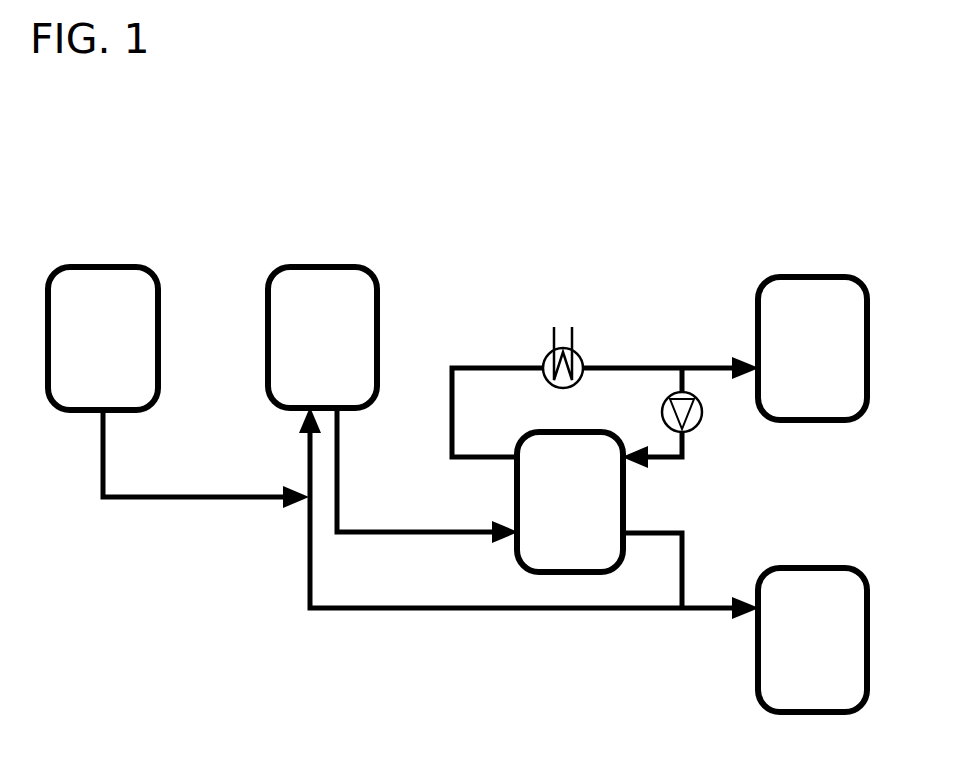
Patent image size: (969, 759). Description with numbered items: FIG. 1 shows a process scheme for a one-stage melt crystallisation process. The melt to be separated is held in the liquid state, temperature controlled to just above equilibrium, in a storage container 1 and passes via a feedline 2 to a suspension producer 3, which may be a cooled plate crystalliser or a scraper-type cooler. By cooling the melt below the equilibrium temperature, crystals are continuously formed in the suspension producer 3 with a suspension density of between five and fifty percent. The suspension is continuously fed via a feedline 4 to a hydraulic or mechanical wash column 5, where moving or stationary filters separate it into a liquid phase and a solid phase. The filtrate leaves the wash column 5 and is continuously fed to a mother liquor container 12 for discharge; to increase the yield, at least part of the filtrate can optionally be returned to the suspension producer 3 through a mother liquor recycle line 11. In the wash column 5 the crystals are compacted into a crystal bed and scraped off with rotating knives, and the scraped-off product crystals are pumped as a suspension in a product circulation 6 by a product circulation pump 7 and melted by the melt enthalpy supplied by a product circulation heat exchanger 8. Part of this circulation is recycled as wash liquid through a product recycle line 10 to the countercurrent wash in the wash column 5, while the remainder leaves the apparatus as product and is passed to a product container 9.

The storage container 1 is at (88, 305).
The feedline 2 is at (203, 498).
The suspension producer 3 is at (308, 305).
The feedline 4 is at (362, 532).
The wash column 5 is at (583, 460).
The product circulation 6 is at (465, 368).
The product circulation pump 7 is at (693, 398).
The product circulation heat exchanger 8 is at (543, 355).
The product container 9 is at (812, 302).
The product recycle line 10 is at (673, 457).
The mother liquor recycle line 11 is at (603, 610).
The mother liquor container 12 is at (798, 607).